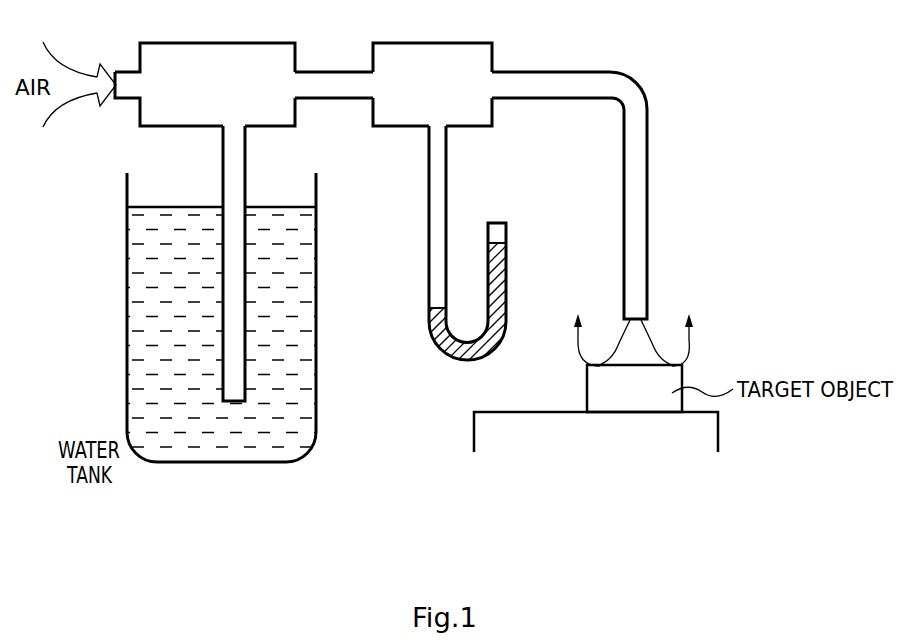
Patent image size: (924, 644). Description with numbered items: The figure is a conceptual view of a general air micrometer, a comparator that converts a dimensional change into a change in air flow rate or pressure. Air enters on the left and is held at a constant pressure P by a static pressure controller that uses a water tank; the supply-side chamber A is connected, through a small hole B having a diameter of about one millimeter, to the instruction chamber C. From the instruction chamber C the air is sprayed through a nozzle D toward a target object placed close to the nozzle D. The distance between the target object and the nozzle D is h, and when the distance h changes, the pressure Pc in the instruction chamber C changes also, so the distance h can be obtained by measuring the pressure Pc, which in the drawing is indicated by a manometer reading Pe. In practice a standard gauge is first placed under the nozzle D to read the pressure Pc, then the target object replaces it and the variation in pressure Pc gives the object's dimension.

The first chamber A is at (205, 70).
The small hole B is at (334, 73).
The instruction chamber C is at (432, 71).
The nozzle D is at (592, 219).
The constant pressure P is at (316, 207).
The pressure in the instruction chamber Pc is at (435, 88).
The manometer pressure Pe is at (506, 243).
The distance between the target object and the nozzle h is at (647, 320).